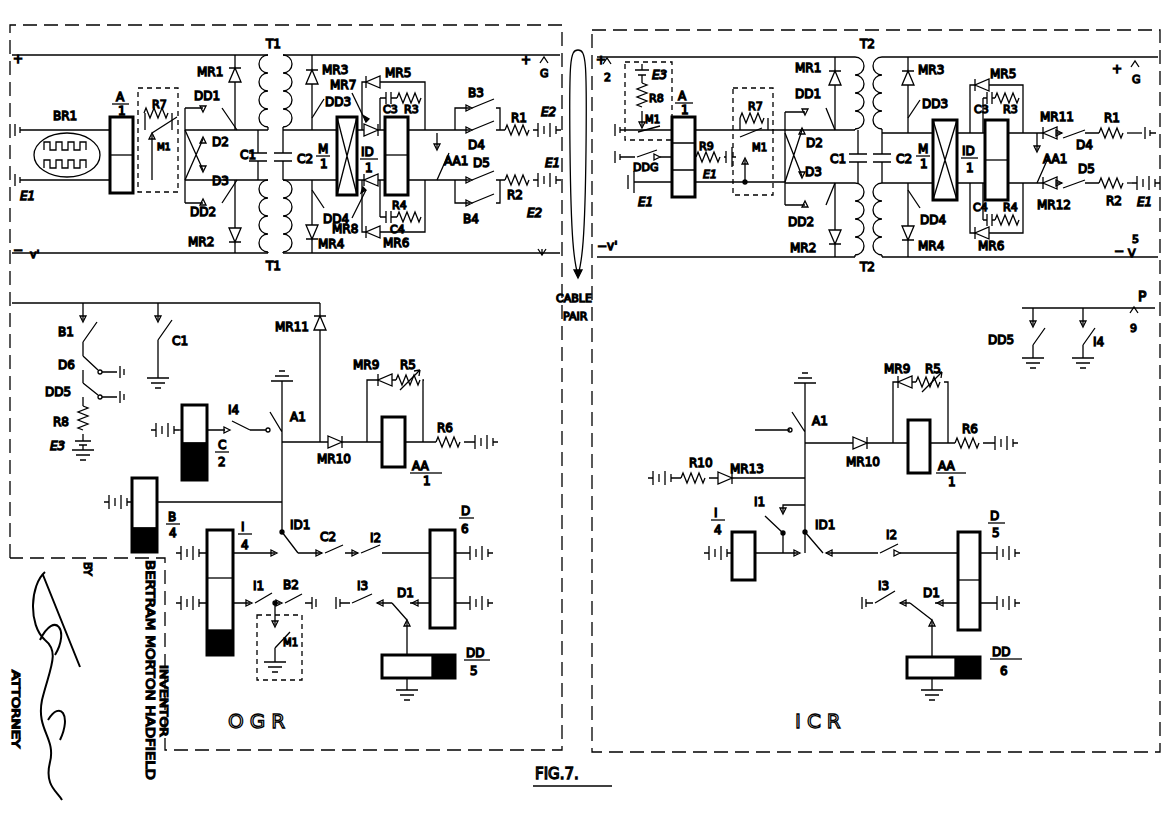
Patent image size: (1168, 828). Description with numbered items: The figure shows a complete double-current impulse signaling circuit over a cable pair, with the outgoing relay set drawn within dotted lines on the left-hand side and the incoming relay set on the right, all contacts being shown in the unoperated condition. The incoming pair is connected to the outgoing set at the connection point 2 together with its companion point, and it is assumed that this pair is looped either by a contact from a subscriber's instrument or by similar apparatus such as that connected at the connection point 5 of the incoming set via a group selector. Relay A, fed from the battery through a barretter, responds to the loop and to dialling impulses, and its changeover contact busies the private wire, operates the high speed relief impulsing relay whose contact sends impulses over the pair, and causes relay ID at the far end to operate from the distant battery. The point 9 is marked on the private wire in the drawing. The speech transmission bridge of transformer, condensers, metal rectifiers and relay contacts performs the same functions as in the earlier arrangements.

The incoming pair connection point 2 is at (35, 64).
The outgoing pair connection point 5 is at (533, 245).
The pulse lead P 9 is at (45, 309).